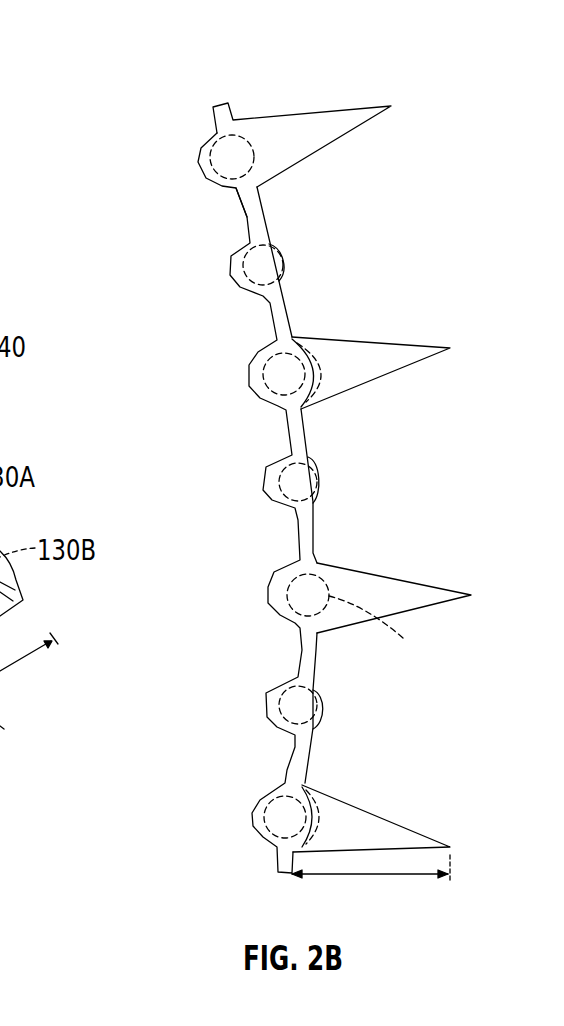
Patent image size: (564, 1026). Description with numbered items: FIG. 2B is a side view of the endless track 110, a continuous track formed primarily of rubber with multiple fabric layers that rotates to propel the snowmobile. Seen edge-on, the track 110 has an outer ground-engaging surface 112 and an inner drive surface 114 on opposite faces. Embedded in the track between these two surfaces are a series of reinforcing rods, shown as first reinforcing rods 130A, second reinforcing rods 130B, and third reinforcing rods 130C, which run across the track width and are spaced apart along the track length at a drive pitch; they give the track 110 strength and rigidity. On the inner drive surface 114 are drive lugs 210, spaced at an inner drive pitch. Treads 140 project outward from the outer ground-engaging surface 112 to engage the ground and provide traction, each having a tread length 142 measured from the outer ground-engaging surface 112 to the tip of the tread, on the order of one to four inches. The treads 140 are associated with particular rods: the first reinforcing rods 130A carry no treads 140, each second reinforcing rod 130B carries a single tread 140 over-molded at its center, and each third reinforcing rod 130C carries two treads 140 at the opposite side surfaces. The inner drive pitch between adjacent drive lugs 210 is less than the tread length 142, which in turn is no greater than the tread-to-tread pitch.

The endless track 110 is at (97, 133).
The outer ground-engaging surface 112 is at (270, 224).
The inner drive surface 114 is at (241, 214).
The first reinforcing rods 130A is at (288, 258).
The second reinforcing rods 130B is at (314, 374).
The third reinforcing rods 130C is at (216, 134).
The treads 140 is at (391, 106).
The tread length 142 is at (367, 875).
The drive lugs 210 is at (198, 167).